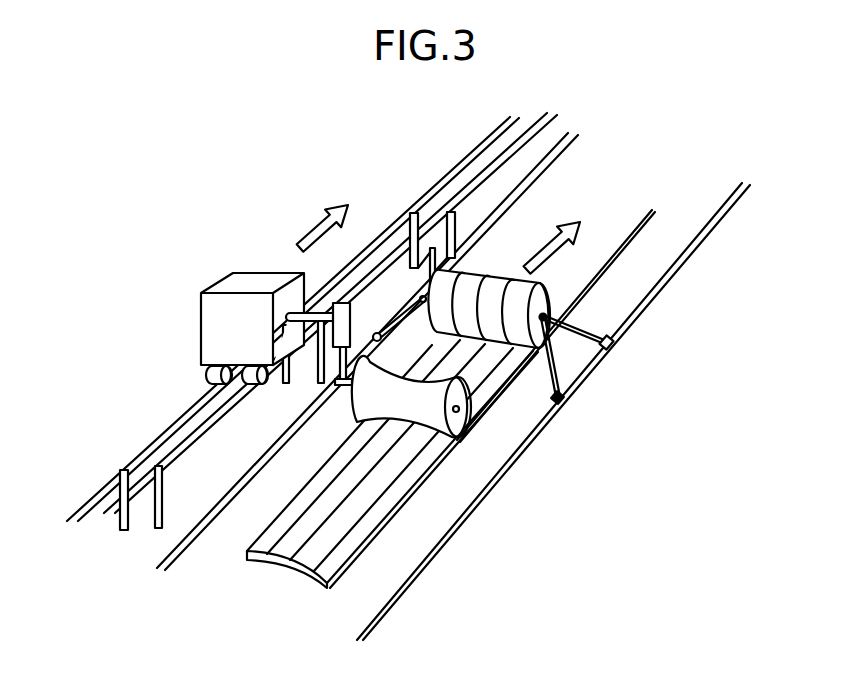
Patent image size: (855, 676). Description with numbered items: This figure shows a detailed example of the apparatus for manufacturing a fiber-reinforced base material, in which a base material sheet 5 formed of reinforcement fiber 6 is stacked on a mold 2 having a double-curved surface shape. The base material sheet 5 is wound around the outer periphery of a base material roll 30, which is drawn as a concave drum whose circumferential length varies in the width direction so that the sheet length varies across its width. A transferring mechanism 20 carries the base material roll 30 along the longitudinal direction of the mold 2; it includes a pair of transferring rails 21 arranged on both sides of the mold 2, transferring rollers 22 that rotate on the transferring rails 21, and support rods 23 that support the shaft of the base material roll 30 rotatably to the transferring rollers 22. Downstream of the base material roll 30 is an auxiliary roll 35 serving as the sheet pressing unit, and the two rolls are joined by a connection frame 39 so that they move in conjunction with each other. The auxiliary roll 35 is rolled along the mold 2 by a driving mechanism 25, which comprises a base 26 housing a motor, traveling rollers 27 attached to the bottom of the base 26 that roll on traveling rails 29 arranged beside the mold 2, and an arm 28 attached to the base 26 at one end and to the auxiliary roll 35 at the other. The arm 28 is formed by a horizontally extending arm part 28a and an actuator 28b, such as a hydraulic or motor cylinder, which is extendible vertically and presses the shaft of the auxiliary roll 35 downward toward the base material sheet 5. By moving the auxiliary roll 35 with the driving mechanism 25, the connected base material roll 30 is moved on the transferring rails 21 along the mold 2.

The mold 2 is at (600, 212).
The base material sheet 5 is at (389, 485).
The reinforcement fiber 6 is at (302, 542).
The transferring mechanism 20 is at (573, 388).
The transferring rails 21 is at (192, 546).
The transferring rollers 22 is at (612, 347).
The support rods 23 is at (590, 340).
The driving mechanism 25 is at (214, 276).
The base 26 is at (200, 316).
The traveling rollers 27 is at (205, 379).
The arm 28 is at (342, 302).
The arm part 28a is at (306, 310).
The actuator 28b is at (339, 367).
The traveling rails 29 is at (107, 482).
The base material roll 30 is at (547, 302).
The auxiliary roll 35 is at (433, 420).
The connection frame 39 is at (407, 214).